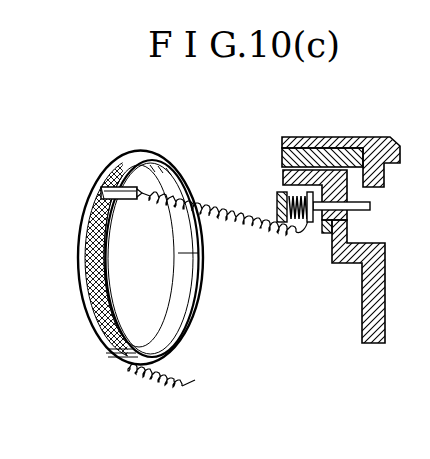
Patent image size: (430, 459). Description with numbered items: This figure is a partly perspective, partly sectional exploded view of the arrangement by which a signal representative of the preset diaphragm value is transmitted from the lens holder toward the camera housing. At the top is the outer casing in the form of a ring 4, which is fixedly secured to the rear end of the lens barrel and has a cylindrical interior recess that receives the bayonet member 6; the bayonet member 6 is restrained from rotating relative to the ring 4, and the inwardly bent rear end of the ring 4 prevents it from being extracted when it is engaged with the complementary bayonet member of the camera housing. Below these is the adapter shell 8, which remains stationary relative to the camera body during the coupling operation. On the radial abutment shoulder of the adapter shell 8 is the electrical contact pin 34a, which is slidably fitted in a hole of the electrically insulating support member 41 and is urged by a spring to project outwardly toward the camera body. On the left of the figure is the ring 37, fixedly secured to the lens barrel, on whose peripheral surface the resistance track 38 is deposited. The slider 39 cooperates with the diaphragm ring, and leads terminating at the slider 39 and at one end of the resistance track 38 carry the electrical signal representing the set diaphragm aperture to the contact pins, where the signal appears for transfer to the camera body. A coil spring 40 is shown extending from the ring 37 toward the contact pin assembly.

The ring 4 is at (365, 145).
The bayonet member 6 is at (307, 157).
The adapter shell 8 is at (368, 322).
The electrical contact pin 34a is at (370, 206).
The ring 37 is at (182, 300).
The resistance track 38 is at (97, 323).
The slider 39 is at (130, 199).
The spring 40 is at (195, 380).
The support member 41 is at (323, 233).